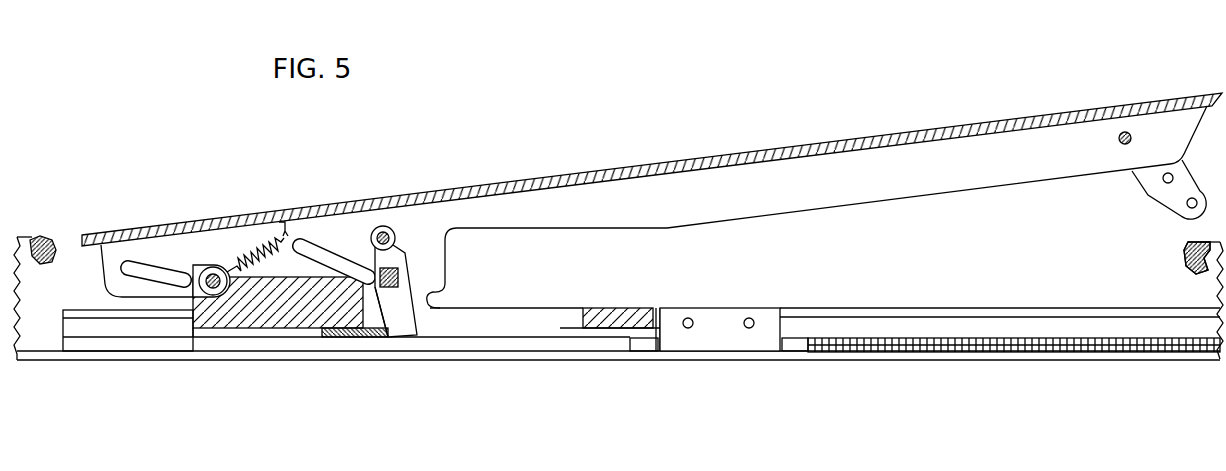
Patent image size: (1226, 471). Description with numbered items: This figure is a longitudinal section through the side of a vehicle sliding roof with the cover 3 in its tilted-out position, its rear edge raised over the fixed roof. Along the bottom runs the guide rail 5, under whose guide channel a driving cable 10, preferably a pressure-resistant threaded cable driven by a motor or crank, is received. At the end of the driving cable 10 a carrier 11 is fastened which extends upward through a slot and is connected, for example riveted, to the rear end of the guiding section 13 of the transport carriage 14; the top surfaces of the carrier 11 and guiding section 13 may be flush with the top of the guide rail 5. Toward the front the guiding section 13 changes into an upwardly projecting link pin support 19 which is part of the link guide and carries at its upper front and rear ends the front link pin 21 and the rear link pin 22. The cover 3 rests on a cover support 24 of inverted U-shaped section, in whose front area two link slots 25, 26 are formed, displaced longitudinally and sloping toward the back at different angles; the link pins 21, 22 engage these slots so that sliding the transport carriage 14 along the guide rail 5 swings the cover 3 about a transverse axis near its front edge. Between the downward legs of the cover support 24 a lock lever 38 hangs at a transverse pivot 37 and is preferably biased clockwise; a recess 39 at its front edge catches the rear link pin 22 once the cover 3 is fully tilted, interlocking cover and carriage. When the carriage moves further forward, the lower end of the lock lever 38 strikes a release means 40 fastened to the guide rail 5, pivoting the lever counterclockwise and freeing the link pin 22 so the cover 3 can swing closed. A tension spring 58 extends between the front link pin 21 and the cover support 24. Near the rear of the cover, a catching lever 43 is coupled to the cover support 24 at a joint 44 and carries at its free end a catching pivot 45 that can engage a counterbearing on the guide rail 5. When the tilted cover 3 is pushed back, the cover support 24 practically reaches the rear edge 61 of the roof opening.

The cover 3 is at (753, 151).
The guide rail 5 is at (506, 360).
The driving cable 10 is at (826, 347).
The carrier 11 is at (722, 326).
The guiding section 13 is at (620, 316).
The transport carriage 14 is at (236, 333).
The link pin support 19 is at (260, 315).
The front link pin 21 is at (211, 268).
The rear link pin 22 is at (380, 337).
The cover support 24 is at (587, 207).
The link slot 25 is at (147, 265).
The link slot 26 is at (322, 258).
The transverse pivot 37 is at (383, 226).
The lock lever 38 is at (405, 315).
The recess 39 is at (398, 270).
The release means 40 is at (336, 337).
The catching lever 43 is at (1186, 186).
The joint 44 is at (1125, 132).
The catching pivot 45 is at (1186, 204).
The tension spring 58 is at (254, 255).
The rear edge 61 is at (1176, 268).